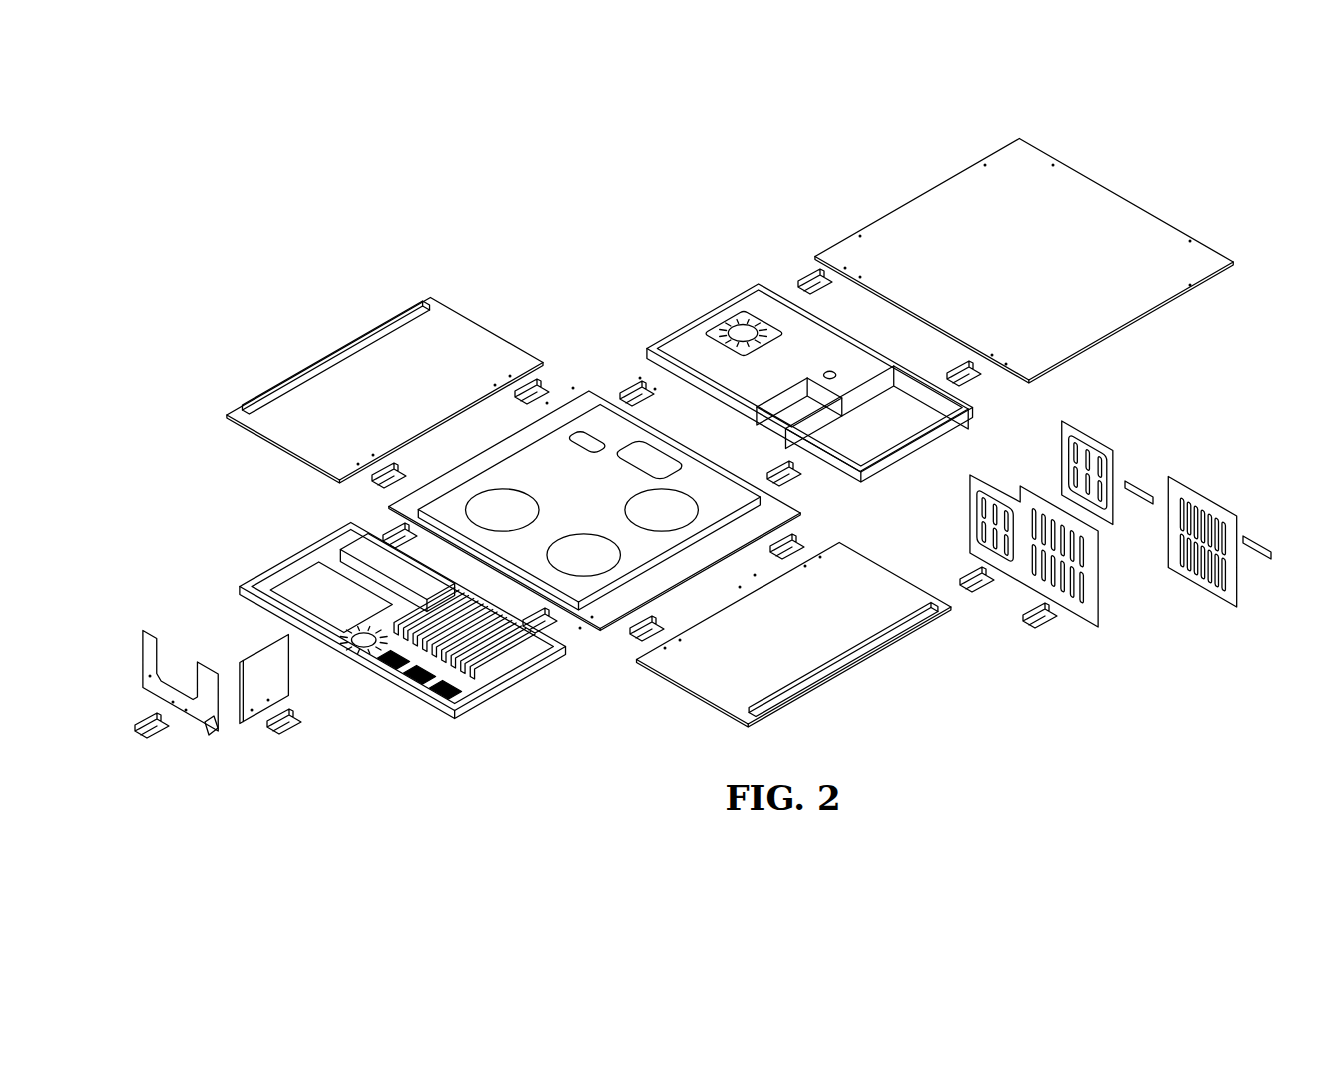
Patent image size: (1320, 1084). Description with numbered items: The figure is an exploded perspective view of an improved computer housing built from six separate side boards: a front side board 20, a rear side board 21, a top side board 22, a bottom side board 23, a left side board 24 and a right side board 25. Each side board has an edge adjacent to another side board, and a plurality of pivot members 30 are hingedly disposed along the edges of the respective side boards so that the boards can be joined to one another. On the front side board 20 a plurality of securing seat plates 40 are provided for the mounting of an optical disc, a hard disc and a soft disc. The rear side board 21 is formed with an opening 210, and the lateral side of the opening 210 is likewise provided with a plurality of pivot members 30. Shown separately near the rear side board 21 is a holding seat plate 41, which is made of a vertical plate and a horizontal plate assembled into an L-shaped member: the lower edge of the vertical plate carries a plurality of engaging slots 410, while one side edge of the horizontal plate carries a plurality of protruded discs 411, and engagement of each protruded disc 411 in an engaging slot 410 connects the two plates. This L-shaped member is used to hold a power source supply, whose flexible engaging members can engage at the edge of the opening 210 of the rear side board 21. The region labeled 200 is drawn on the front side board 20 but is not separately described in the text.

The front side board 20 is at (692, 312).
The rear side board 21 is at (297, 535).
The top side board 22 is at (323, 343).
The bottom side board 23 is at (845, 667).
The left side board 24 is at (592, 382).
The right side board 25 is at (1105, 210).
The pivot member 30 is at (803, 270).
The securing seat plate 40 is at (1102, 430).
The holding seat plate 41 is at (138, 645).
The receiving tray 200 is at (872, 440).
The opening 210 is at (301, 590).
The engaging slot 410 is at (212, 722).
The protruded disc 411 is at (237, 667).